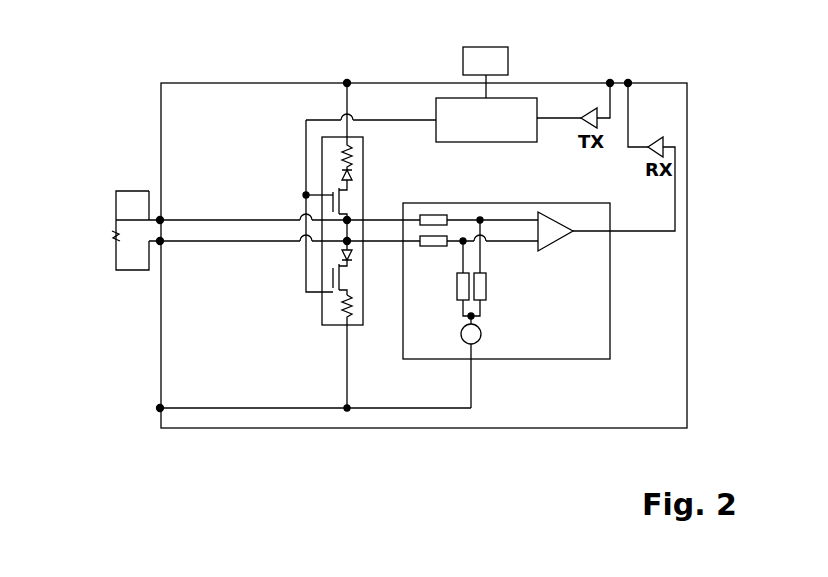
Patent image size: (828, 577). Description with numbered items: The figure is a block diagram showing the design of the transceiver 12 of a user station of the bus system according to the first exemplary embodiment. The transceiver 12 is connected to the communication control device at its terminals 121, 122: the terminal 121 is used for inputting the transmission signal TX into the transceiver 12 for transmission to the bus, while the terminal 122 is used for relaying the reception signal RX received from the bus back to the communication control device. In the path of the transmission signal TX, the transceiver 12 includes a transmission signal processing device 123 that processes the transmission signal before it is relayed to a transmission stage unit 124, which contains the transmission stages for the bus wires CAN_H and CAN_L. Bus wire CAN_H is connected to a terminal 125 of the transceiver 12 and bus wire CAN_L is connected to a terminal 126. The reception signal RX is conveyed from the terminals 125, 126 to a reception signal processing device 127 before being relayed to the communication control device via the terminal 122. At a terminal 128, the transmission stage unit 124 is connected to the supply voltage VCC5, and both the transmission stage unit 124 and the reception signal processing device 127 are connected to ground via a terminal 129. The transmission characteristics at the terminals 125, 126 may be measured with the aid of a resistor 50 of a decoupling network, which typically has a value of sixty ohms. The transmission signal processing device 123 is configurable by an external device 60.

The transceiver 12 is at (678, 83).
The resistor 50 is at (113, 236).
The external device 60 is at (463, 62).
The terminal 121 is at (610, 83).
The terminal 122 is at (628, 83).
The transmission signal processing device 123 is at (518, 98).
The transmission stage unit 124 is at (322, 303).
The terminal 125 is at (160, 220).
The terminal 126 is at (160, 241).
The reception signal processing device 127 is at (560, 359).
The terminal 128 is at (347, 83).
The terminal 129 is at (160, 408).